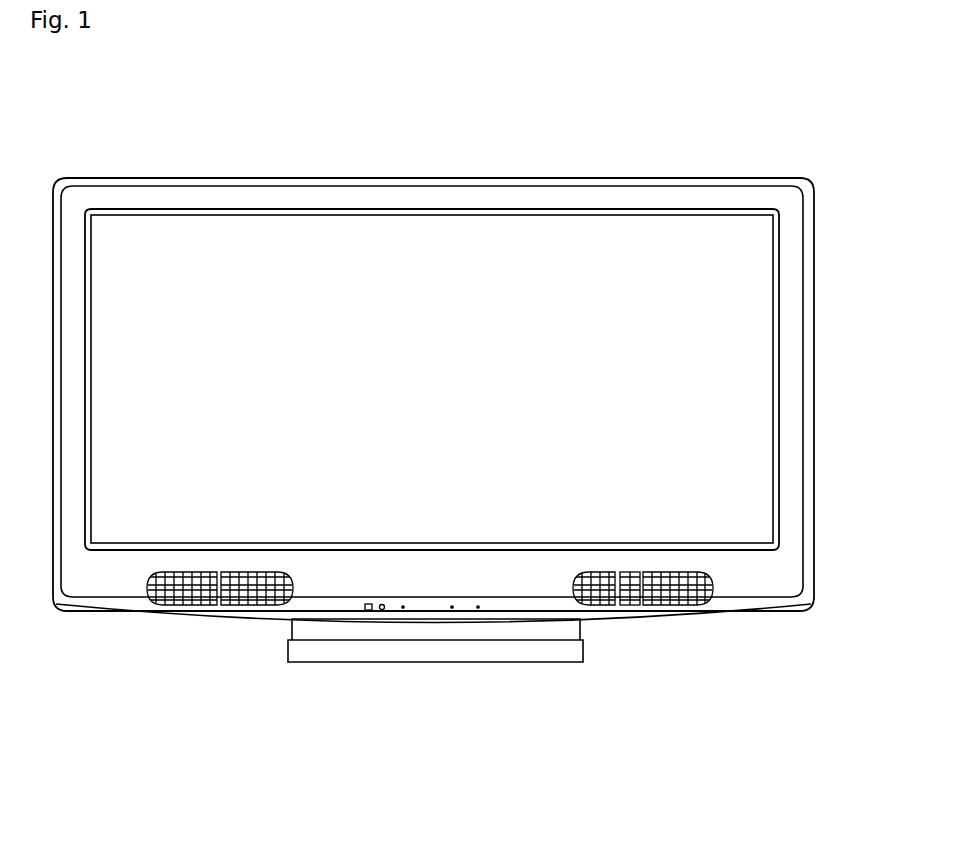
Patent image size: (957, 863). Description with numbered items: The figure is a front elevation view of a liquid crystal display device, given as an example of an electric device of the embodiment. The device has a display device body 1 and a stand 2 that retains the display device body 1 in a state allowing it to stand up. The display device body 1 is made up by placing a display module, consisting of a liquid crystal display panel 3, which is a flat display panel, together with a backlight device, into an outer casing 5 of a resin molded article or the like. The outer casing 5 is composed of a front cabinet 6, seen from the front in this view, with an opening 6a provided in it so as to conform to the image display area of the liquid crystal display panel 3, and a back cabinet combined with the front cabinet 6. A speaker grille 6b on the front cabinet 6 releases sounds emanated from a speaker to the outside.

The display device body 1 is at (815, 256).
The stand 2 is at (423, 654).
The liquid crystal display panel 3 is at (301, 233).
The outer casing 5 is at (627, 179).
The front cabinet 6 is at (793, 480).
The opening 6a is at (772, 353).
The speaker grille 6b is at (190, 598).